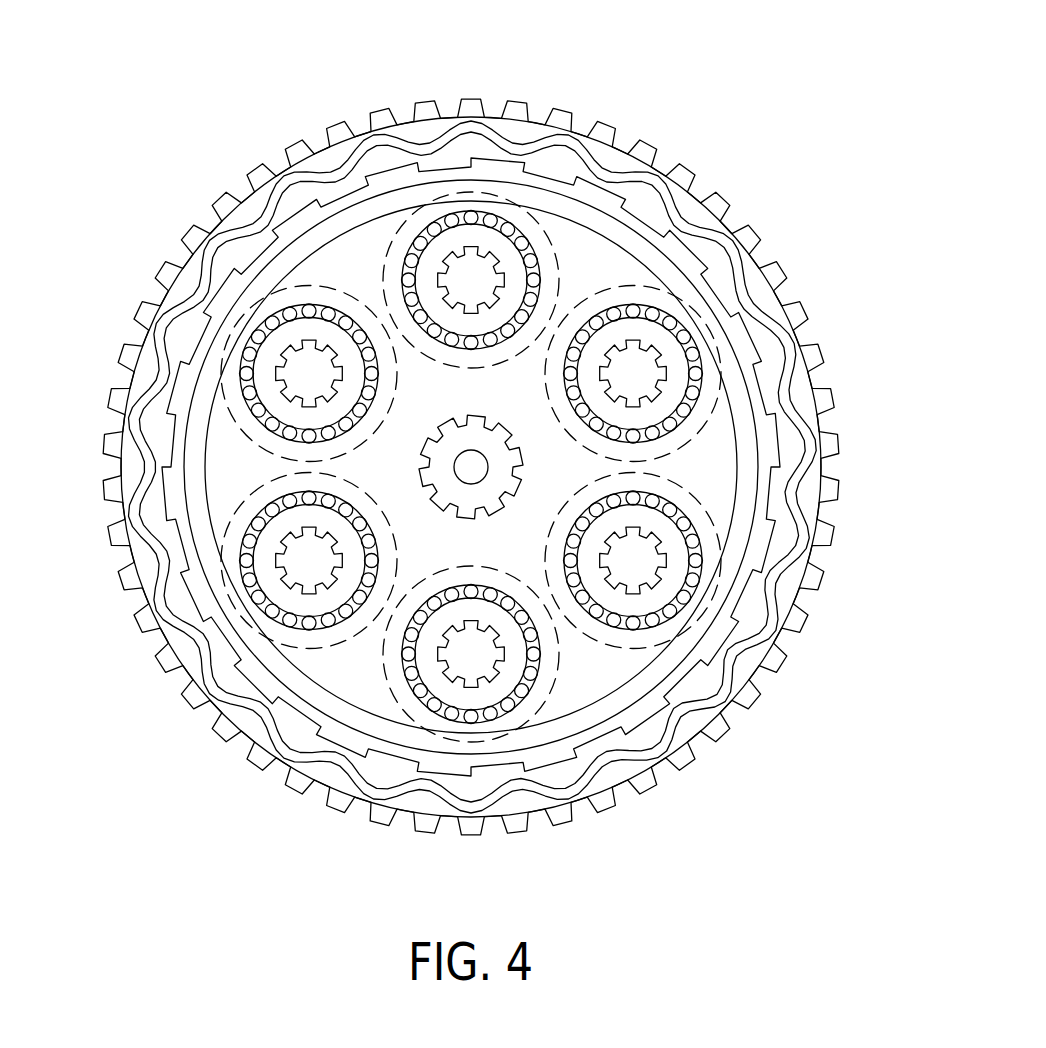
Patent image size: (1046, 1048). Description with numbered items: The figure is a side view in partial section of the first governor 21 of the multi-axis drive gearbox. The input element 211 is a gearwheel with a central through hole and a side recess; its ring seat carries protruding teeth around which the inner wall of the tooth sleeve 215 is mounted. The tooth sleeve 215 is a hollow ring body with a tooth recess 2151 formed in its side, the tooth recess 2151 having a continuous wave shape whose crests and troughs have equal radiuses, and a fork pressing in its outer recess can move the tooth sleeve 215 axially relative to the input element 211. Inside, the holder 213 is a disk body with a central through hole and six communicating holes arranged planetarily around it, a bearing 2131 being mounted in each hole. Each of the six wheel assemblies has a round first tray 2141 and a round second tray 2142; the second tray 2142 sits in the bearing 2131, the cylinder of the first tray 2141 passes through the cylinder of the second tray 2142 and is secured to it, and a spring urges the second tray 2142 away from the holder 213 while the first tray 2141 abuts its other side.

The first governor 21 is at (485, 490).
The input element 211 is at (590, 190).
The holder 213 is at (357, 678).
The bearing 2131 is at (265, 607).
The first tray 2141 is at (297, 387).
The second tray 2142 is at (290, 337).
The tooth sleeve 215 is at (512, 132).
The tooth recess 2151 is at (570, 140).